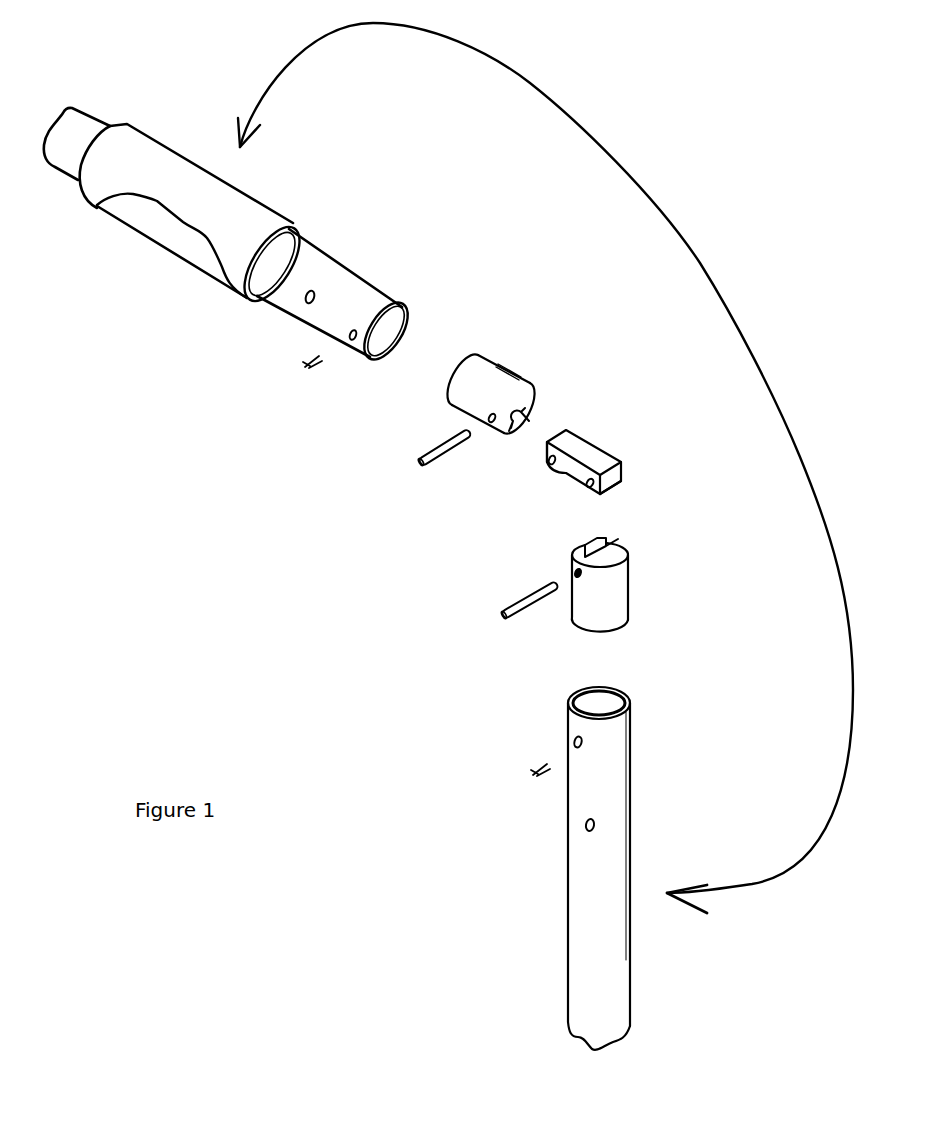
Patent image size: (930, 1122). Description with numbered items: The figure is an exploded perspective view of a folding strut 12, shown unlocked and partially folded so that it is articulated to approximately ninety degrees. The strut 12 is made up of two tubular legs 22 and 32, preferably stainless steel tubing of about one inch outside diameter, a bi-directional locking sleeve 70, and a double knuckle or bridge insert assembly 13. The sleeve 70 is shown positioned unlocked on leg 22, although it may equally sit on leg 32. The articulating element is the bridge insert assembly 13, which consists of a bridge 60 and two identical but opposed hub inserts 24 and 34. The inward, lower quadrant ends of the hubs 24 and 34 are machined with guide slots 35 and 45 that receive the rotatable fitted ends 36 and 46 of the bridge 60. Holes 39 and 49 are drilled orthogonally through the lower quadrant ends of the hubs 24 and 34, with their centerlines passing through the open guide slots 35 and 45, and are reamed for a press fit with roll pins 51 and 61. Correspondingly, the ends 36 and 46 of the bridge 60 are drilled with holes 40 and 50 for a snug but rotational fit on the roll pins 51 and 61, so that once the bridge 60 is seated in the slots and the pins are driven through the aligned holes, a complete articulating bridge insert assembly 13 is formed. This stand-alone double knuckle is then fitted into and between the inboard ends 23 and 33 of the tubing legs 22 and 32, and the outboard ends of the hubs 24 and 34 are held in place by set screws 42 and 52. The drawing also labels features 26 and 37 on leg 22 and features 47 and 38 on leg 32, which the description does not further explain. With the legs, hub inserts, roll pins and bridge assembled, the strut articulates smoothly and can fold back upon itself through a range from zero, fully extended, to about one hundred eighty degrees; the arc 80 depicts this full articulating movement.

The folding strut 12 is at (744, 167).
The bridge insert assembly 13 is at (385, 542).
The tubular leg 22 is at (162, 237).
The inboard end of leg 22 23 is at (378, 358).
The hub insert 24 is at (477, 367).
The hole in handle tube 26 is at (307, 298).
The tubular leg 32 is at (610, 877).
The inboard end of leg 32 33 is at (630, 693).
The hub insert 34 is at (613, 613).
The guide slot 35 is at (535, 415).
The rotatable fitted end of bridge 36 is at (552, 467).
The hole in handle tube end 37 is at (355, 342).
The hole in shaft tube 38 is at (585, 827).
The hole 39 is at (495, 417).
The hole 40 is at (547, 462).
The set screw 42 is at (305, 364).
The guide slot 45 is at (602, 543).
The rotatable fitted end of bridge 46 is at (597, 493).
The hole in shaft tube end 47 is at (572, 740).
The hole 49 is at (576, 570).
The hole 50 is at (587, 485).
The roll pin 51 is at (407, 455).
The set screw 52 is at (527, 768).
The bridge 60 is at (593, 452).
The roll pin 61 is at (507, 620).
The locking sleeve 70 is at (115, 150).
The arc 80 is at (297, 50).